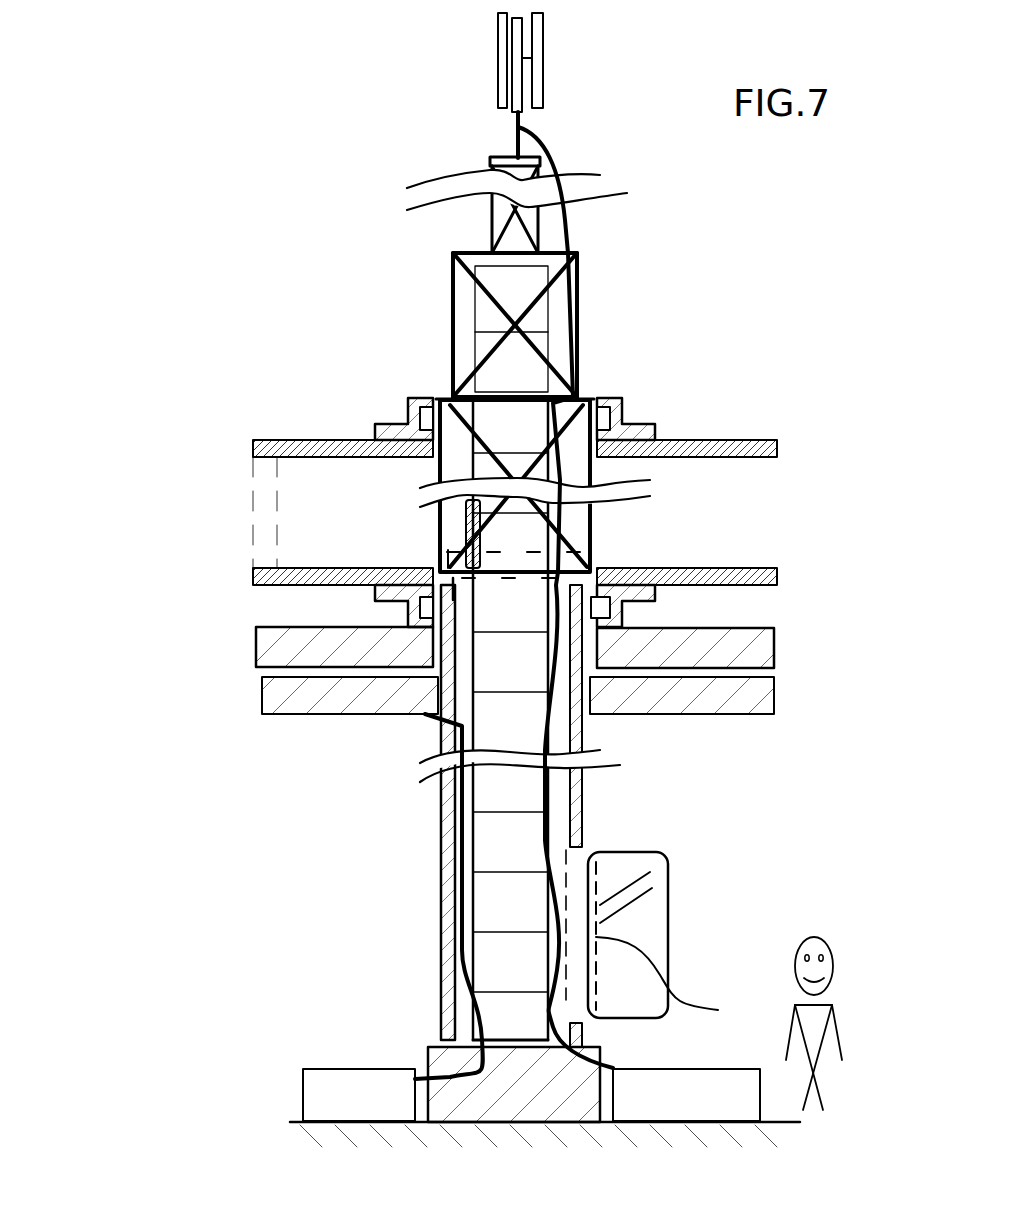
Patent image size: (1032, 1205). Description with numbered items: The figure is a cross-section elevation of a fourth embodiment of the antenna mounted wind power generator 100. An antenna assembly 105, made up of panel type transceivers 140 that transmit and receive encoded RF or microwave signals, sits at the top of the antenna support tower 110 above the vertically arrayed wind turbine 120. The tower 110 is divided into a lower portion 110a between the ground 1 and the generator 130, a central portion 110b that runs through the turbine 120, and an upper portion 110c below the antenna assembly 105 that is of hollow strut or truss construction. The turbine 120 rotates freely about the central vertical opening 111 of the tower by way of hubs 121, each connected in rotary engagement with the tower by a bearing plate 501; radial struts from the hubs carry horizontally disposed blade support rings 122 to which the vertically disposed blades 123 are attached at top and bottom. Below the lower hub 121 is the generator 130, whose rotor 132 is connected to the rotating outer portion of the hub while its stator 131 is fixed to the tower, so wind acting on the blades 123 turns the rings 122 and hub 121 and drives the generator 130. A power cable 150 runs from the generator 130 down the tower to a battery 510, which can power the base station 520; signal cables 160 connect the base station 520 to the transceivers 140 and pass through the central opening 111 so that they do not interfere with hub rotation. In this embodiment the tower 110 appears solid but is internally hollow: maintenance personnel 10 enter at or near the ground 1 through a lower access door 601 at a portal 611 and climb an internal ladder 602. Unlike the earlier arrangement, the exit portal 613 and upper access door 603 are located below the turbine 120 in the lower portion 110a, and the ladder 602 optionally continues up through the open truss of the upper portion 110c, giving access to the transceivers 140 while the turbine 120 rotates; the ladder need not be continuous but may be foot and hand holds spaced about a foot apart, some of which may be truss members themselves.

The antenna mounted wind power generator 100 is at (160, 116).
The antenna support tower 110 is at (426, 336).
The lower portion of the tower 110a is at (215, 688).
The central portion of the tower 110b is at (178, 418).
The upper portion of the tower 110c is at (222, 24).
The antenna assembly 105 is at (560, 76).
The panel type transceivers 140 is at (495, 74).
The central vertical opening 111 is at (468, 328).
The vertically arrayed wind turbine 120 is at (341, 398).
The hub 121 is at (655, 432).
The blade support ring 122 is at (340, 562).
The blade 123 is at (778, 532).
The generator 130 is at (800, 635).
The stator 131 is at (350, 716).
The rotor 132 is at (357, 653).
The power cable 150 is at (472, 1028).
The signal cable 160 is at (482, 803).
The bearing plate 501 is at (605, 408).
The lower access door 601 is at (670, 935).
The internal ladder 602 is at (505, 950).
The upper access door 603 is at (440, 533).
The portal 611 is at (686, 984).
The exit portal 613 is at (600, 566).
The battery 510 is at (378, 1108).
The base station 520 is at (715, 1108).
The ground 1 is at (305, 1135).
The maintenance personnel 10 is at (840, 1025).